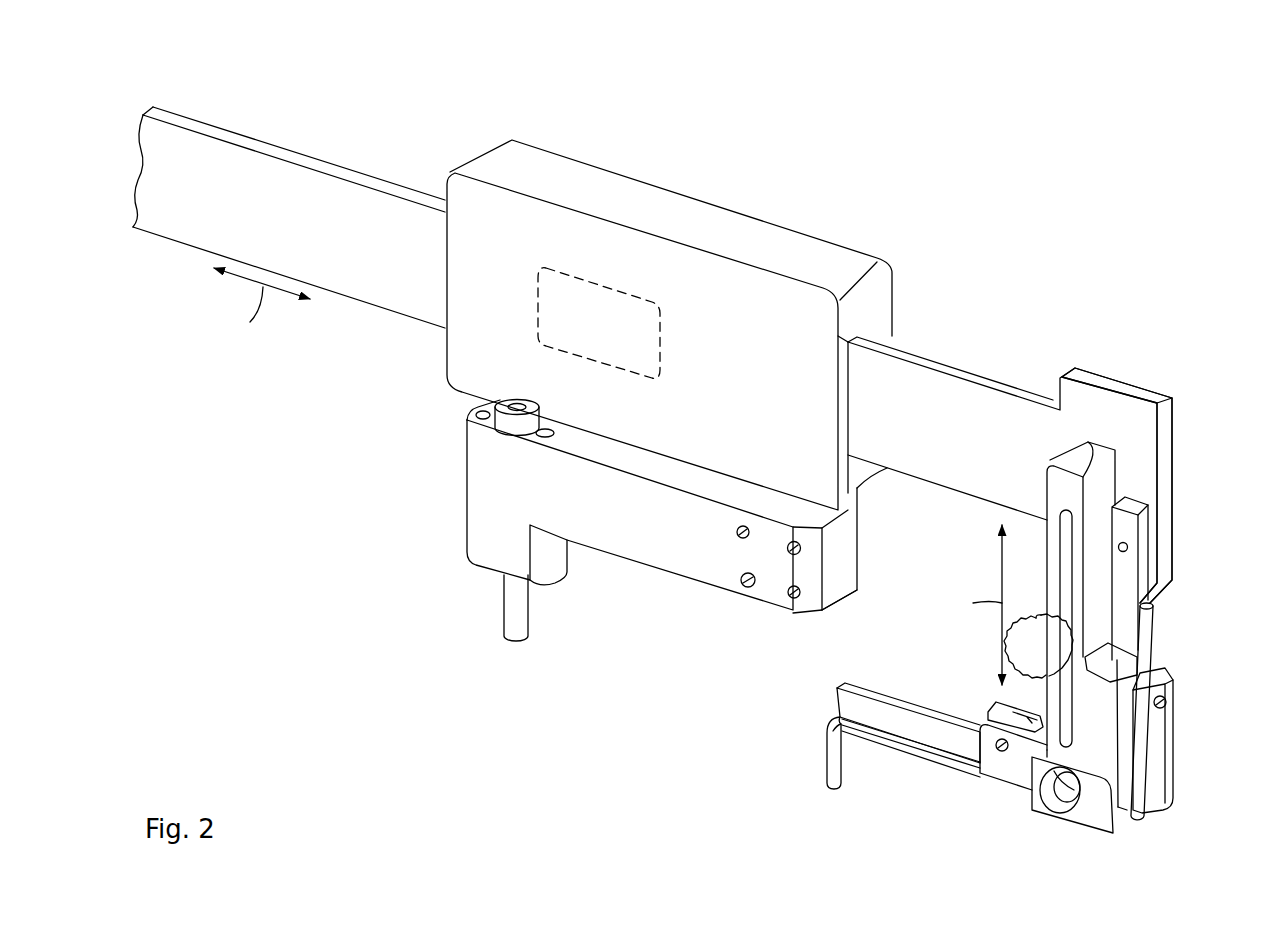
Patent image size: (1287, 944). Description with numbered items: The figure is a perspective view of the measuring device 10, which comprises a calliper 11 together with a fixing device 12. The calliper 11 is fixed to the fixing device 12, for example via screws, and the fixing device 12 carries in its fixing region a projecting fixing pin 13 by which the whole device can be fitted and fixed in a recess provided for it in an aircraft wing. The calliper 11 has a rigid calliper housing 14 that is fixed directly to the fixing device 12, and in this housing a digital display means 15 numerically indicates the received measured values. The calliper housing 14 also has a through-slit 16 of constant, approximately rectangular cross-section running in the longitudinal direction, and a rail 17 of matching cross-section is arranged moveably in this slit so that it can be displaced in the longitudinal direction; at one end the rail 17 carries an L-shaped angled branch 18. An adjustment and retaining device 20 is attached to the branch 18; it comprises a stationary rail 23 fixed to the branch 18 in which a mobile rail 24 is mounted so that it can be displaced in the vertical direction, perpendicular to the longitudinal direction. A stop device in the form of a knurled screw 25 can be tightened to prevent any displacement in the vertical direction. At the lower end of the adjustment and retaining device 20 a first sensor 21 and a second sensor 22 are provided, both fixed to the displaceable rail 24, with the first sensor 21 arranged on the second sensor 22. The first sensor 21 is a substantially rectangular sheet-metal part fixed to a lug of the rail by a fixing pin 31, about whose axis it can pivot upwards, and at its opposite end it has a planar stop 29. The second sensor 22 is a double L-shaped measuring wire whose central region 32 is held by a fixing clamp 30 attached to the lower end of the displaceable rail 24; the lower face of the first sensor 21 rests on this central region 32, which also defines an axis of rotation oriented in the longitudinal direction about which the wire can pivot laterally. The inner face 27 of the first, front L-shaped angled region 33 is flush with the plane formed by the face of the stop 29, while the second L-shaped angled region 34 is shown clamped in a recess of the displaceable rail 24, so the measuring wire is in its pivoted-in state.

The measuring device 10 is at (1172, 283).
The calliper 11 is at (880, 236).
The fixing device 12 is at (495, 480).
The fixing pin 13 is at (517, 620).
The calliper housing 14 is at (595, 182).
The display means 15 is at (595, 300).
The through-slit 16 is at (864, 333).
The rail 17 is at (273, 173).
The L-shaped angled branch 18 is at (1143, 438).
The adjustment and retaining device 20 is at (1214, 722).
The first sensor 21 is at (957, 743).
The second sensor 22 is at (930, 750).
The stationary rail 23 is at (1125, 568).
The mobile rail 24 is at (1097, 532).
The knurled screw 25 is at (1027, 623).
The inner face 27 is at (845, 768).
The stop 29 is at (833, 702).
The fixing clamp 30 is at (1093, 817).
The fixing pin 31 is at (1002, 752).
The central region 32 is at (904, 756).
The first, front L-shaped angled region 33 is at (828, 770).
The second L-shaped angled region 34 is at (1147, 627).